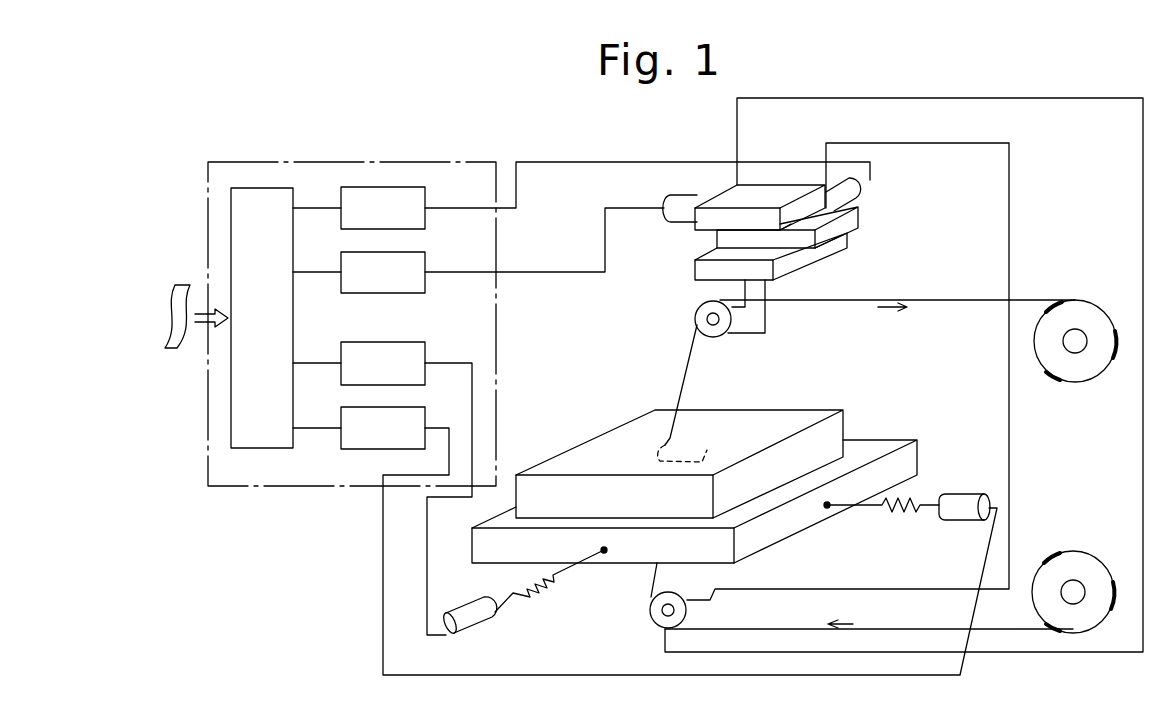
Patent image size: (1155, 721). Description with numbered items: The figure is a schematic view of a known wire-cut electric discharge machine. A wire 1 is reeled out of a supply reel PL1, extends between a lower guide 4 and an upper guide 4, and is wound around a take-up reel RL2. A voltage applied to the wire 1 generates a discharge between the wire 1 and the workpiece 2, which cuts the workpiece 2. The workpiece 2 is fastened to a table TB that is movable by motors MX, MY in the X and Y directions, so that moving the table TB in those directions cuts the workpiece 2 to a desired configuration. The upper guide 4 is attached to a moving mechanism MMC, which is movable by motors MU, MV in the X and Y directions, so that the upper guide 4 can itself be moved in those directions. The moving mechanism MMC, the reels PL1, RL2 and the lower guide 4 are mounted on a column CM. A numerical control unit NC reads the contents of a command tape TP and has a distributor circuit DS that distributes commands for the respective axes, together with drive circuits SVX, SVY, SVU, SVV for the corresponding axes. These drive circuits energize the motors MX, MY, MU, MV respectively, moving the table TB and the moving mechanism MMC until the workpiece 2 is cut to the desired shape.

The numerical control unit NC is at (433, 163).
The distributor circuit DS is at (262, 440).
The command tape TP is at (167, 352).
The drive circuit SVV is at (605, 195).
The drive circuit SVU is at (502, 250).
The drive circuit SVY is at (406, 488).
The drive circuit SVX is at (669, 541).
The motor MU is at (695, 196).
The motor MV is at (857, 190).
The moving mechanism MMC is at (695, 272).
The column CM is at (1009, 222).
The wire 1 is at (688, 357).
The guide 4 is at (717, 337).
The workpiece 2 is at (820, 400).
The table TB is at (888, 438).
The motor MX is at (963, 500).
The motor MY is at (480, 620).
The reel RL2 is at (1077, 382).
The supply reel PL1 is at (1077, 557).